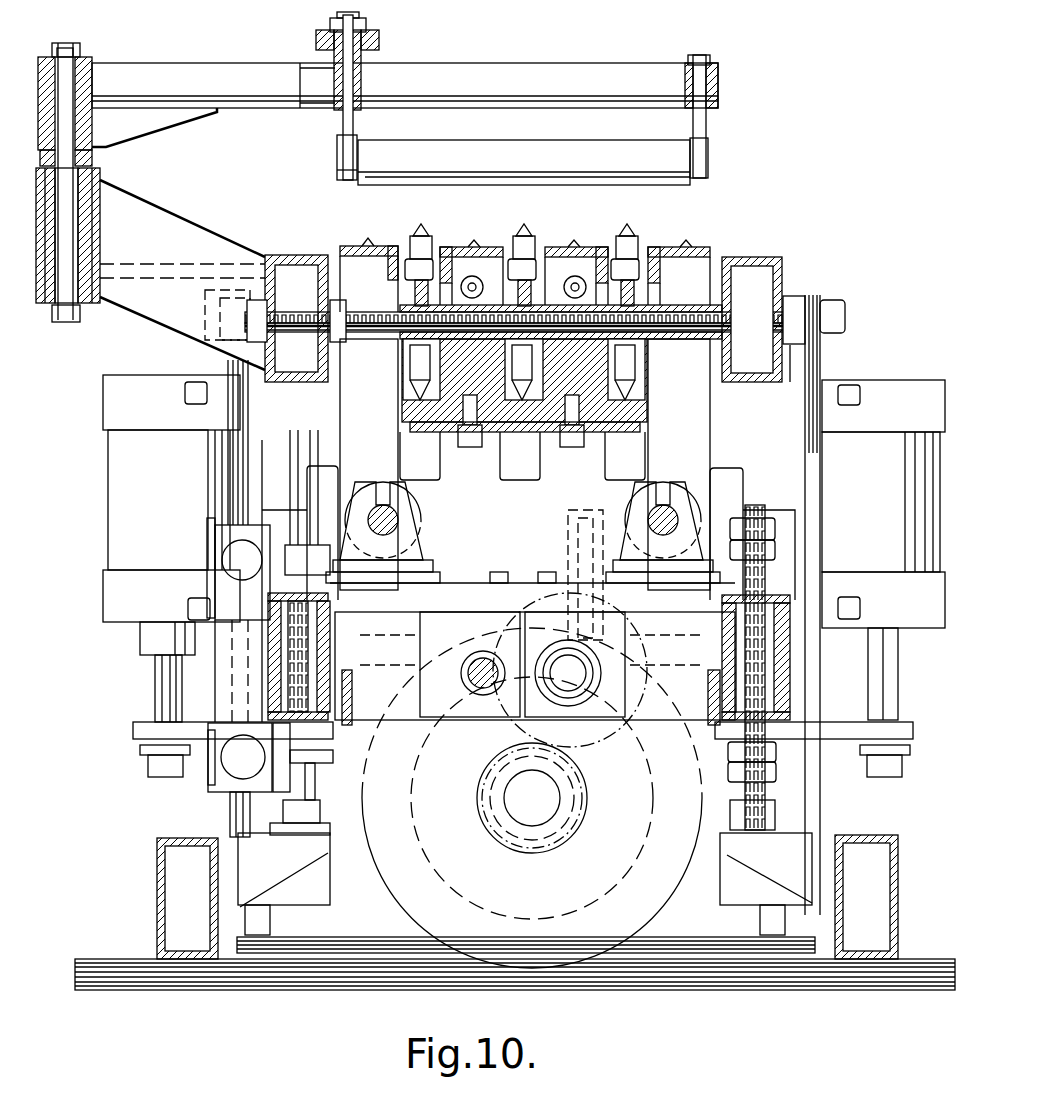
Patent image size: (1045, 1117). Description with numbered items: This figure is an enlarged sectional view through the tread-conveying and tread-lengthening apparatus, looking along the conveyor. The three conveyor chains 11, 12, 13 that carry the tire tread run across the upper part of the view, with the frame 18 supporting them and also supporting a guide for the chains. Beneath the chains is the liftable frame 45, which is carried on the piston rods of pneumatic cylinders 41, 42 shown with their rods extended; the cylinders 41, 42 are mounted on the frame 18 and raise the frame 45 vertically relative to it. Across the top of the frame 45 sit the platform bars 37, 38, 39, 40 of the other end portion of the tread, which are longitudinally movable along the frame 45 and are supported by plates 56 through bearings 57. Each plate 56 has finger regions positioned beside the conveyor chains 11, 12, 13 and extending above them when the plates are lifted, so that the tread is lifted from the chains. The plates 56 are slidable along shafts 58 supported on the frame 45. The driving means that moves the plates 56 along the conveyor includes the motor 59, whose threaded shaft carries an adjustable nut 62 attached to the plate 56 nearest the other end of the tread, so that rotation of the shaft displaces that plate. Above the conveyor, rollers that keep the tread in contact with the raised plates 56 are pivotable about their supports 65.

The chain 11 is at (636, 236).
The chain 12 is at (533, 236).
The chain 13 is at (430, 236).
The frame 18 is at (757, 257).
The platform bar 37 is at (700, 247).
The platform bar 38 is at (590, 247).
The platform bar 39 is at (490, 247).
The platform bar 40 is at (380, 246).
The pneumatic cylinder 41 is at (106, 498).
The pneumatic cylinder 42 is at (894, 507).
The frame 45 is at (765, 702).
The plate 56 is at (340, 442).
The bearing 57 is at (412, 503).
The shaft 58 is at (412, 521).
The motor 59 is at (670, 903).
The nut 62 is at (590, 682).
The support 65 is at (94, 170).